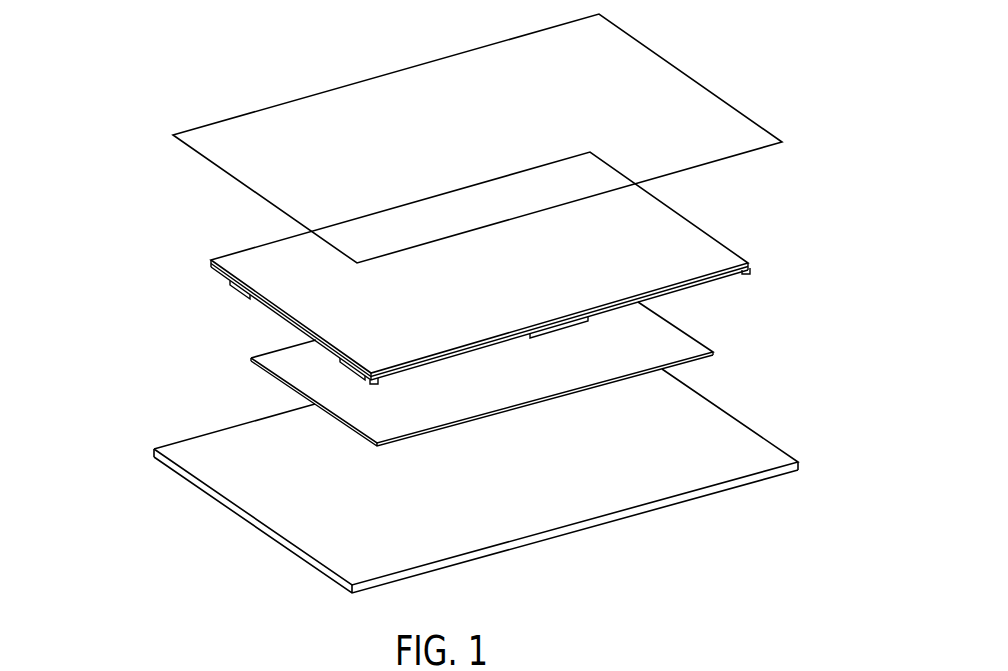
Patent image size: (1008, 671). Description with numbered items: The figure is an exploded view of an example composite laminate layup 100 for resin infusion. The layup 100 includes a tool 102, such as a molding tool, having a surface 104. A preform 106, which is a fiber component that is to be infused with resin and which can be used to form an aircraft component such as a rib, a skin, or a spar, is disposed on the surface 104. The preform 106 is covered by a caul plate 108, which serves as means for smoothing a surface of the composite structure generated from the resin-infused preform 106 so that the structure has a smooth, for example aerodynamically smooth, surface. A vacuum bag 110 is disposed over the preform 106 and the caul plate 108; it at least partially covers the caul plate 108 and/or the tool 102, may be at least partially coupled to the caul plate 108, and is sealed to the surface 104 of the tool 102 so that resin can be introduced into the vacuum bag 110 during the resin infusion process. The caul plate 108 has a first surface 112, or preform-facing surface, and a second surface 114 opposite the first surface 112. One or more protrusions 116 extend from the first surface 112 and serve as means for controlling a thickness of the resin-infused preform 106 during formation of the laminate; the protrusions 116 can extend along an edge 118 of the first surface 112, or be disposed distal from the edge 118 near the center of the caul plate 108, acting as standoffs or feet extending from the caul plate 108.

The composite laminate layup 100 is at (140, 55).
The tool 102 is at (521, 481).
The surface 104 is at (723, 428).
The preform 106 is at (668, 333).
The caul plate 108 is at (486, 280).
The vacuum bag 110 is at (677, 69).
The first surface 112 is at (283, 317).
The second surface 114 is at (723, 258).
The protrusions 116 is at (227, 280).
The edge 118 is at (675, 287).